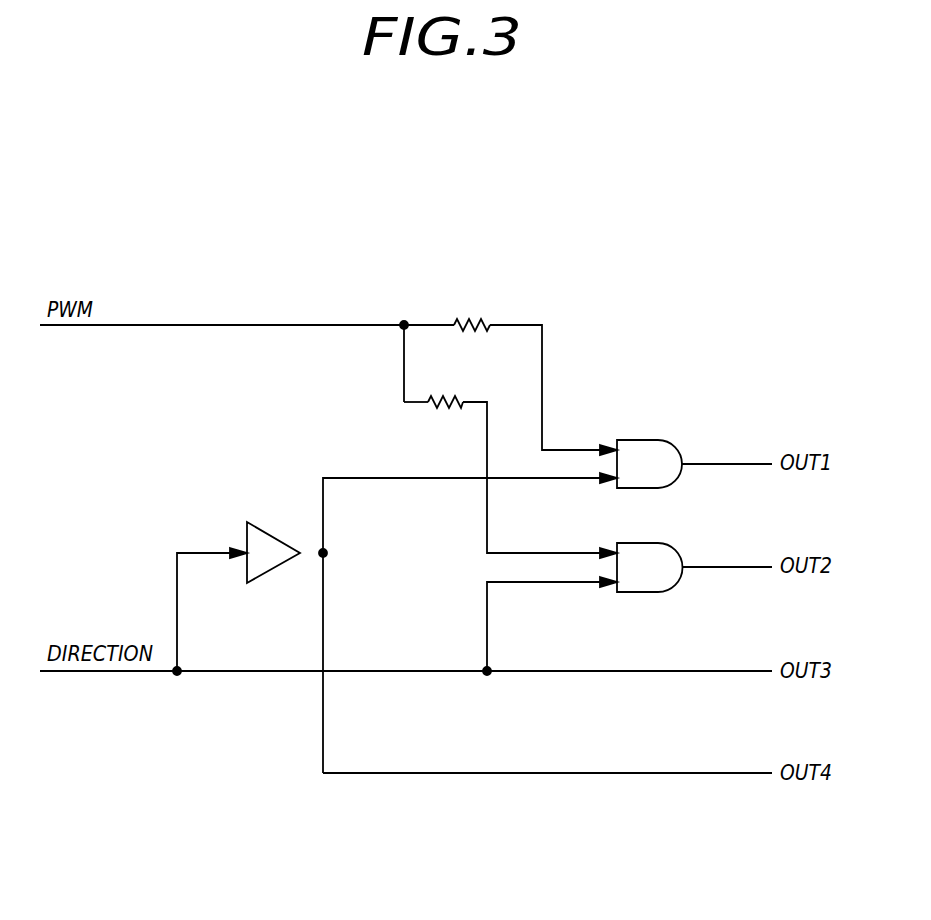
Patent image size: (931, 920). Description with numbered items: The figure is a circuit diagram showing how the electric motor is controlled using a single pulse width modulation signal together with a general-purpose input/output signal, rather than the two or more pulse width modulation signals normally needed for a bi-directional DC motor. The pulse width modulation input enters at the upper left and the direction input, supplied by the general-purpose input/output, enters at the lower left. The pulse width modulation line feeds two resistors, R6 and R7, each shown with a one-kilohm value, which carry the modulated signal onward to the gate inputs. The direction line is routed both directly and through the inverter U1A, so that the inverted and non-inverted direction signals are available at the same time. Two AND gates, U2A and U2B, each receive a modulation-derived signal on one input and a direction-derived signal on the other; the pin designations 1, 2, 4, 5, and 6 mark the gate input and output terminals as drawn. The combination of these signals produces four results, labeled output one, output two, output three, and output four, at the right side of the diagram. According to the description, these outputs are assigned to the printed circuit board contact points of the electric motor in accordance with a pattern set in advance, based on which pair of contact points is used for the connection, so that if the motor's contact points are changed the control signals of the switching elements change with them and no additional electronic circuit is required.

The resistor R6 (1k) R6 is at (472, 324).
The resistor R7 (1k) R7 is at (445, 400).
The inverter 74HC04 U1A is at (273, 556).
The AND gate 74HC08 U2A is at (682, 461).
The AND gate 74HC08 U2B is at (686, 564).
The PCB contact point 1 is at (177, 553).
The PCB contact point 2 is at (323, 553).
The pin 4 is at (560, 553).
The pin 5 is at (560, 582).
The pin 6 is at (720, 567).